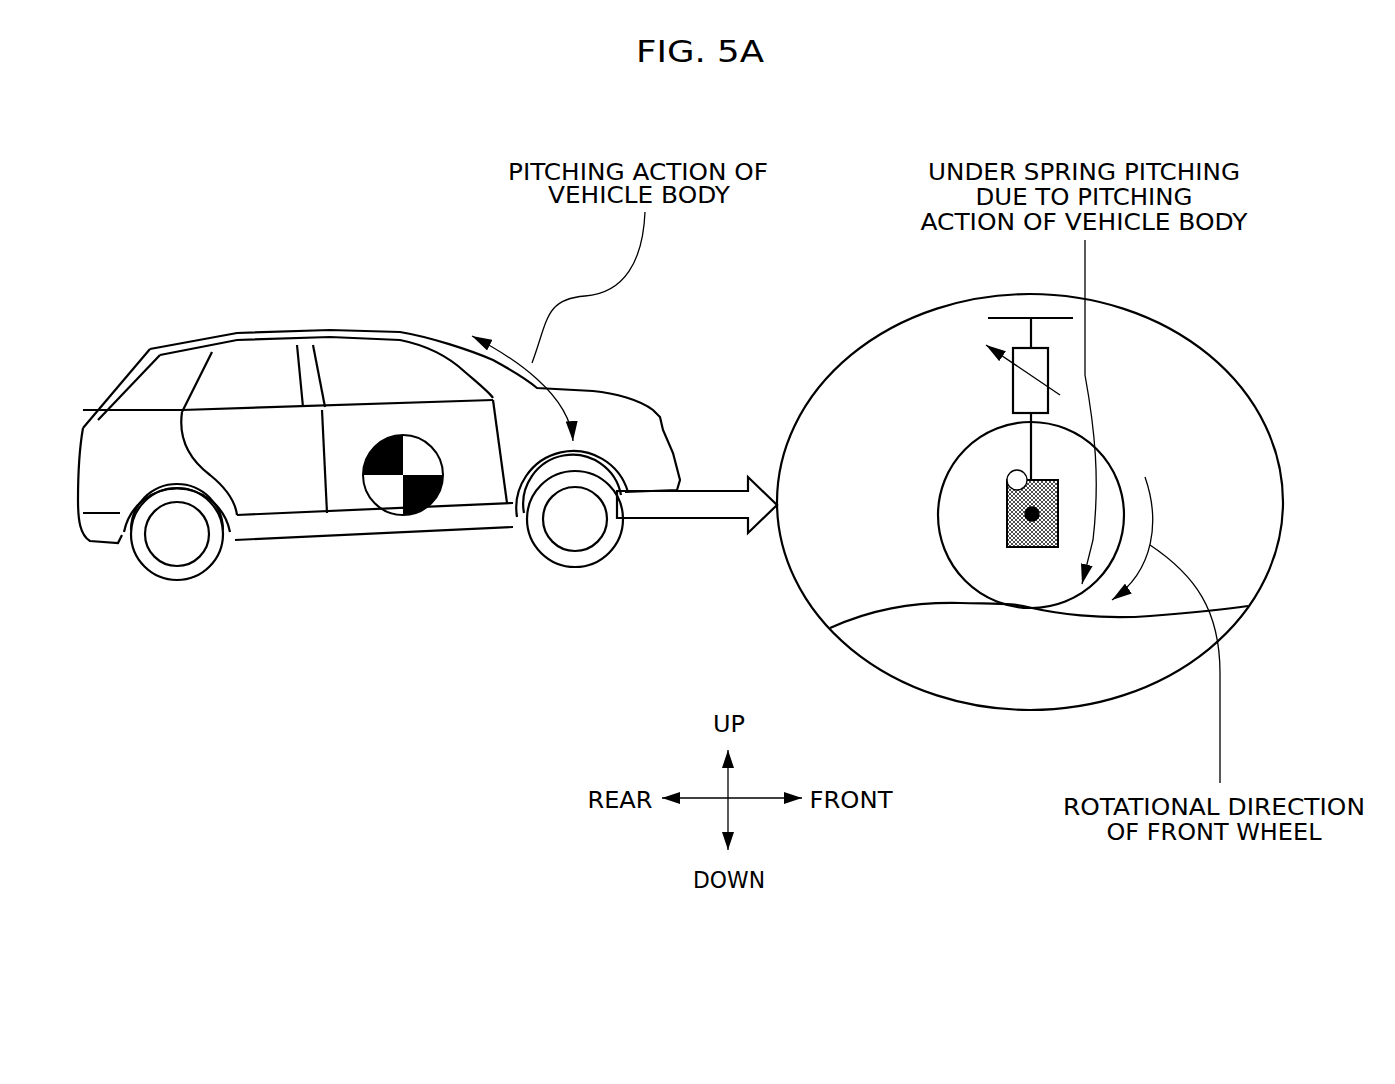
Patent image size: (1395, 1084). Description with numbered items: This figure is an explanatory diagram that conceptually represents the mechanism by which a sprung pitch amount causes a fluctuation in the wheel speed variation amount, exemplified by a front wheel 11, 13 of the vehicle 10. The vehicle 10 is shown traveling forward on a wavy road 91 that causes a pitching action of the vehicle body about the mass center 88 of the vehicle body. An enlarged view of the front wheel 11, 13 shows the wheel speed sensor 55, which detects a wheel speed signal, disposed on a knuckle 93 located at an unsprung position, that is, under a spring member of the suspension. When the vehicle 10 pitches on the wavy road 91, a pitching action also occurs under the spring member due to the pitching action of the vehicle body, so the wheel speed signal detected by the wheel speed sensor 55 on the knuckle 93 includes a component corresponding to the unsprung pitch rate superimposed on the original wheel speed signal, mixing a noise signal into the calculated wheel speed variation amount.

The vehicle 10 is at (373, 322).
The front wheel 11 is at (1072, 439).
The wheel 13 is at (1103, 360).
The wheel speed sensor 55 is at (1008, 476).
The mass center 88 is at (397, 483).
The wavy road 91 is at (898, 607).
The knuckle 93 is at (1005, 500).